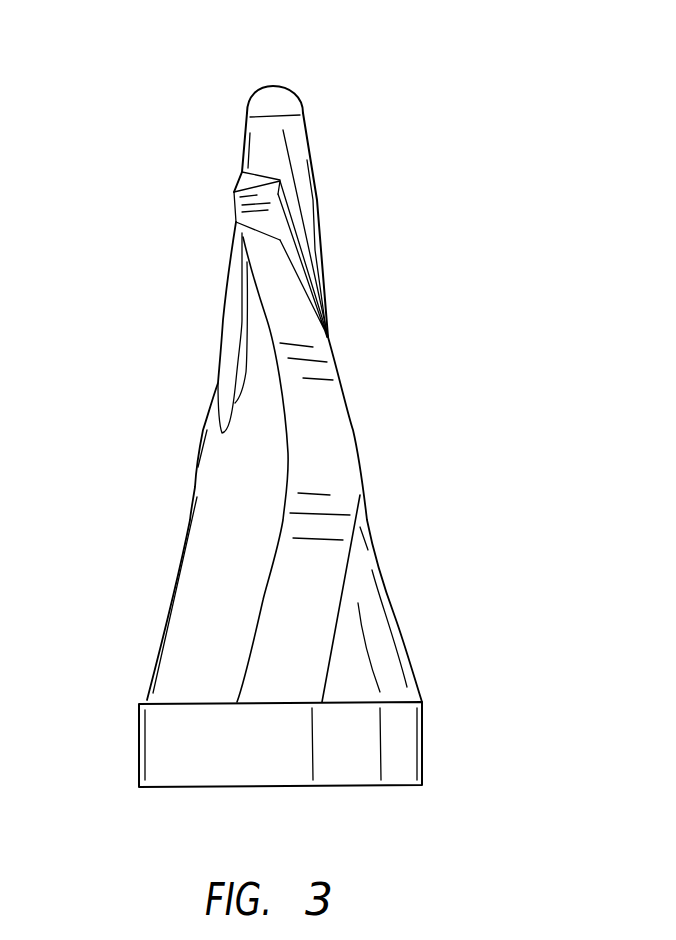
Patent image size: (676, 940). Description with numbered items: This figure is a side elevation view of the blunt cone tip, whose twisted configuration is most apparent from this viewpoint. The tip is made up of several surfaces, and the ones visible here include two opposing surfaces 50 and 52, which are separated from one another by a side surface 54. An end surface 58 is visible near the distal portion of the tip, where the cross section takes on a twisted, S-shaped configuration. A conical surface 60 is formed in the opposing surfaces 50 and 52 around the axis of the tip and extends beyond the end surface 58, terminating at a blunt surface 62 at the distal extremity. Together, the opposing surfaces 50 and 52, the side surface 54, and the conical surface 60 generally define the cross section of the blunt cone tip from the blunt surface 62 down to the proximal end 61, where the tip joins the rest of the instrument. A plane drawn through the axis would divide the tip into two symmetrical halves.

The opposing surface 50 is at (203, 642).
The opposing surface 52 is at (373, 650).
The side surface 54 is at (322, 440).
The end surface 58 is at (238, 190).
The conical surface 60 is at (281, 147).
The proximal end 61 is at (432, 707).
The blunt surface 62 is at (276, 97).